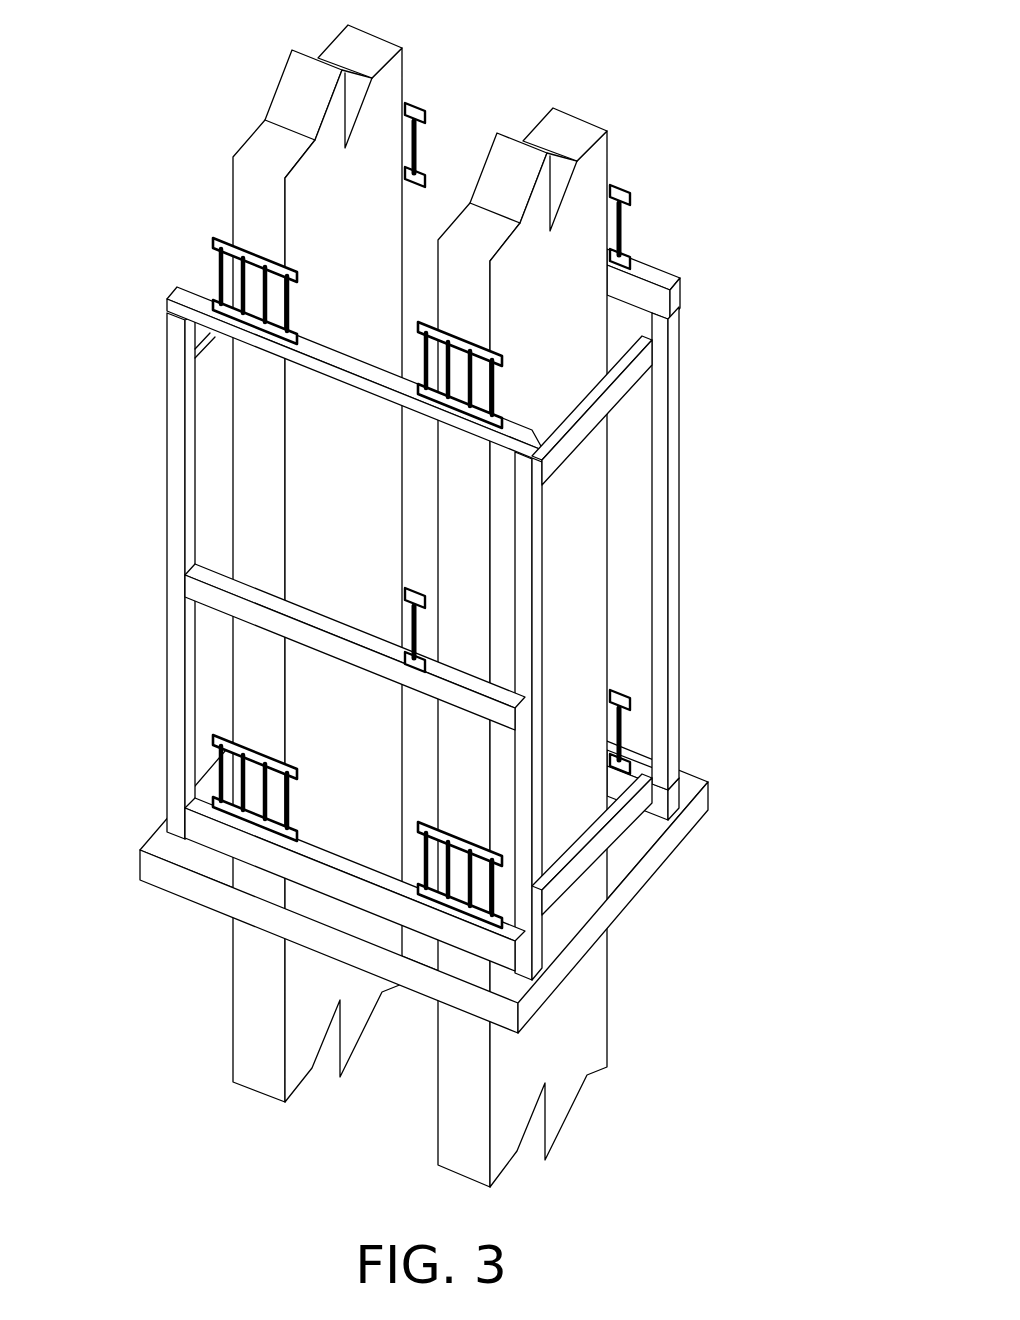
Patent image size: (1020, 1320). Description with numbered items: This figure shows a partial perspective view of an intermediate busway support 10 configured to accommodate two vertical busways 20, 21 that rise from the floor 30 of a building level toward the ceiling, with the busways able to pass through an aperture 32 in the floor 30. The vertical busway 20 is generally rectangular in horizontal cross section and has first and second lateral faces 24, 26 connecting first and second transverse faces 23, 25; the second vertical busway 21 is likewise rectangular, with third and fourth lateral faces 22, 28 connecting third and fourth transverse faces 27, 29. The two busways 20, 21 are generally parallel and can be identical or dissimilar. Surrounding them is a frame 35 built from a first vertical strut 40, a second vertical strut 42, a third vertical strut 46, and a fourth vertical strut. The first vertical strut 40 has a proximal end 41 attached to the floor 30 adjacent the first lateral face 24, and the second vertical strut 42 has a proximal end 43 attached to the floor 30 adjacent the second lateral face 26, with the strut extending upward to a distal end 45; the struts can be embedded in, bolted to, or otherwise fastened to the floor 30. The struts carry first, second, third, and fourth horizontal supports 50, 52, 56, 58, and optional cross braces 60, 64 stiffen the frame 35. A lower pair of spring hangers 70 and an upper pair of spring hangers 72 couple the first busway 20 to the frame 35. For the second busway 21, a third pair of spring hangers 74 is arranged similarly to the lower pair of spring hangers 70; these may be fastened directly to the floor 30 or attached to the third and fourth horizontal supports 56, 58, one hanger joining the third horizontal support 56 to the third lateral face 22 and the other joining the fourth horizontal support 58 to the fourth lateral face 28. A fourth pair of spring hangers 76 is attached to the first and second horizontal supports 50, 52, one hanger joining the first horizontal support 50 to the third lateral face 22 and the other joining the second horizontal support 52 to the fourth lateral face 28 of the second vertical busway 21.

The intermediate busway support 10 is at (660, 240).
The vertical busway 20 is at (563, 628).
The second vertical busway 21 is at (316, 560).
The third lateral face 22 is at (255, 470).
The first transverse face 23 is at (597, 492).
The first lateral face 24 is at (460, 740).
The second transverse face 25 is at (537, 128).
The second lateral face 26 is at (608, 515).
The third transverse face 27 is at (320, 510).
The fourth lateral face 28 is at (407, 97).
The fourth transverse face 29 is at (233, 157).
The floor 30 is at (347, 902).
The aperture 32 is at (227, 845).
The frame 35 is at (428, 621).
The first vertical strut 40 is at (535, 790).
The proximal end 41 is at (550, 982).
The second vertical strut 42 is at (673, 667).
The proximal end 43 is at (673, 785).
The distal end 45 is at (672, 303).
The third vertical strut 46 is at (182, 443).
The first horizontal support 50 is at (180, 300).
The second horizontal support 52 is at (658, 273).
The third horizontal support 56 is at (327, 858).
The fourth horizontal support 58 is at (640, 773).
The cross brace 60 is at (600, 410).
The cross brace 64 is at (200, 347).
The lower pair of spring hangers 70 is at (417, 837).
The upper pair of spring hangers 72 is at (627, 193).
The third pair of spring hangers 74 is at (413, 610).
The fourth pair of spring hangers 76 is at (218, 242).